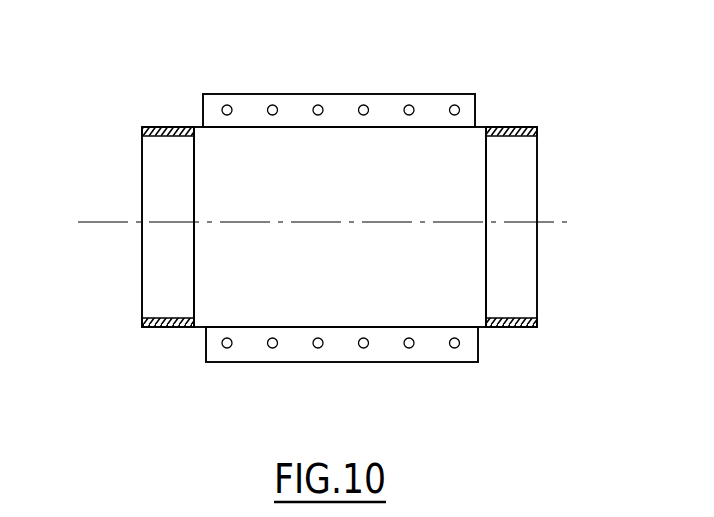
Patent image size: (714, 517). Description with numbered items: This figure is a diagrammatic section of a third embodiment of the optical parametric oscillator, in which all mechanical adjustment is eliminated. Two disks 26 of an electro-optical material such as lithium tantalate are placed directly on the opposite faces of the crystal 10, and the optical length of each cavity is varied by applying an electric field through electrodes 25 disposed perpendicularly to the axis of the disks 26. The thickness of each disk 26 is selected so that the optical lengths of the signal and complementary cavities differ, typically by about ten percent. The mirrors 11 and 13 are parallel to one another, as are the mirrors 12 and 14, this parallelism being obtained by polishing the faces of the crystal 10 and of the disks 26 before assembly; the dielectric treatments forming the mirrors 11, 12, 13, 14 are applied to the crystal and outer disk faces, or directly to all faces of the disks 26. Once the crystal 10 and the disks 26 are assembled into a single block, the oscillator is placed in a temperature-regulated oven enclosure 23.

The crystal 10 is at (347, 292).
The temperature-regulated oven enclosure 23 is at (347, 105).
The electrodes 25 is at (160, 127).
The disks 26 is at (153, 195).
The mirror 11 is at (140, 245).
The mirror 12 is at (192, 274).
The mirror 13 is at (488, 287).
The mirror 14 is at (539, 256).